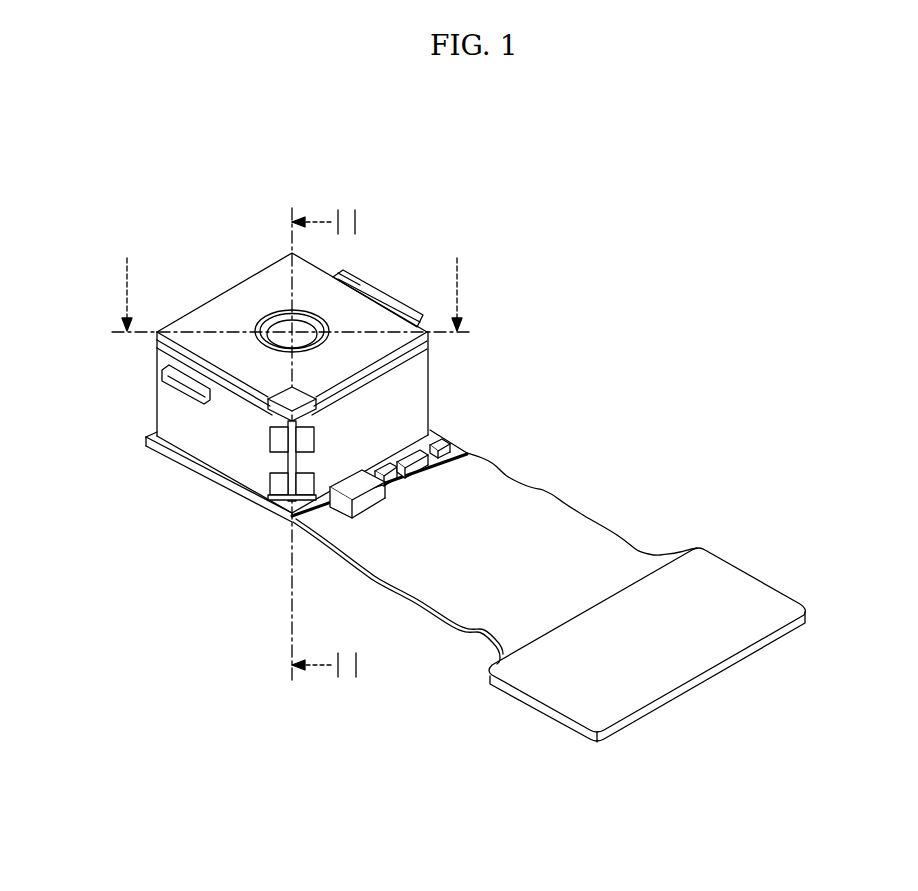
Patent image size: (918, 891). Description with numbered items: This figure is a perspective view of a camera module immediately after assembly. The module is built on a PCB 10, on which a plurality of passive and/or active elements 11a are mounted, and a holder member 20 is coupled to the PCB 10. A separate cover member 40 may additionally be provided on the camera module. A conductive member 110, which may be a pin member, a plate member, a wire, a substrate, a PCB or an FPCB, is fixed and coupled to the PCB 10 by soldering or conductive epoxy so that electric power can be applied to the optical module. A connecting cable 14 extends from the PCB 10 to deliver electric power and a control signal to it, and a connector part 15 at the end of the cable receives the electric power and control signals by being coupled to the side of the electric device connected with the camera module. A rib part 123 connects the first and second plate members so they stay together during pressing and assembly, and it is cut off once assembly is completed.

The PCB 10 is at (237, 495).
The passive and/or active elements 11a is at (338, 503).
The connecting cable 14 is at (568, 537).
The connector part 15 is at (725, 590).
The holder member 20 is at (202, 440).
The cover member 40 is at (347, 300).
The conductive member 110 is at (290, 515).
The rib part 123 is at (187, 365).